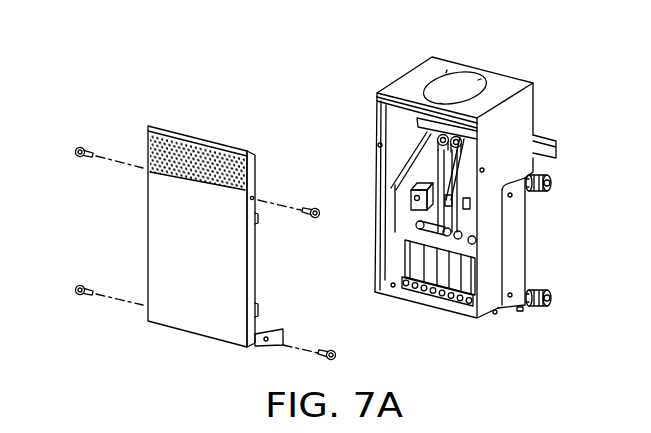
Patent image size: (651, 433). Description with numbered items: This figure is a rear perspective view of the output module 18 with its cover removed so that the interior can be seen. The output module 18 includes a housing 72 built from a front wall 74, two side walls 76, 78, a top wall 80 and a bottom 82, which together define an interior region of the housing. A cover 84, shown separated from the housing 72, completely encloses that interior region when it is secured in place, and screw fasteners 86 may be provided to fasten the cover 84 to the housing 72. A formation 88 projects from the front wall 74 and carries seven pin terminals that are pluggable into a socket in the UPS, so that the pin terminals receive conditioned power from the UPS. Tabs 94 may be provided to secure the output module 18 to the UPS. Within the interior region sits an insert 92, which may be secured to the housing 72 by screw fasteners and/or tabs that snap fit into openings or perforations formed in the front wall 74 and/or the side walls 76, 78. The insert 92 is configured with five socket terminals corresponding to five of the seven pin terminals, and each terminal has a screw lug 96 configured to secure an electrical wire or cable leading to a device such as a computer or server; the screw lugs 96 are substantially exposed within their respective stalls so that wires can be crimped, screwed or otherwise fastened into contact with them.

The output module 18 is at (562, 78).
The housing 72 is at (482, 168).
The front wall 74 is at (537, 103).
The side wall 76 is at (375, 112).
The side wall 78 is at (490, 212).
The top wall 80 is at (495, 77).
The bottom 82 is at (427, 293).
The cover 84 is at (82, 147).
The screw fasteners 86 is at (206, 254).
The formation 88 is at (558, 142).
The insert 92 is at (408, 210).
The tabs 94 is at (551, 183).
The screw lugs 96 is at (410, 197).